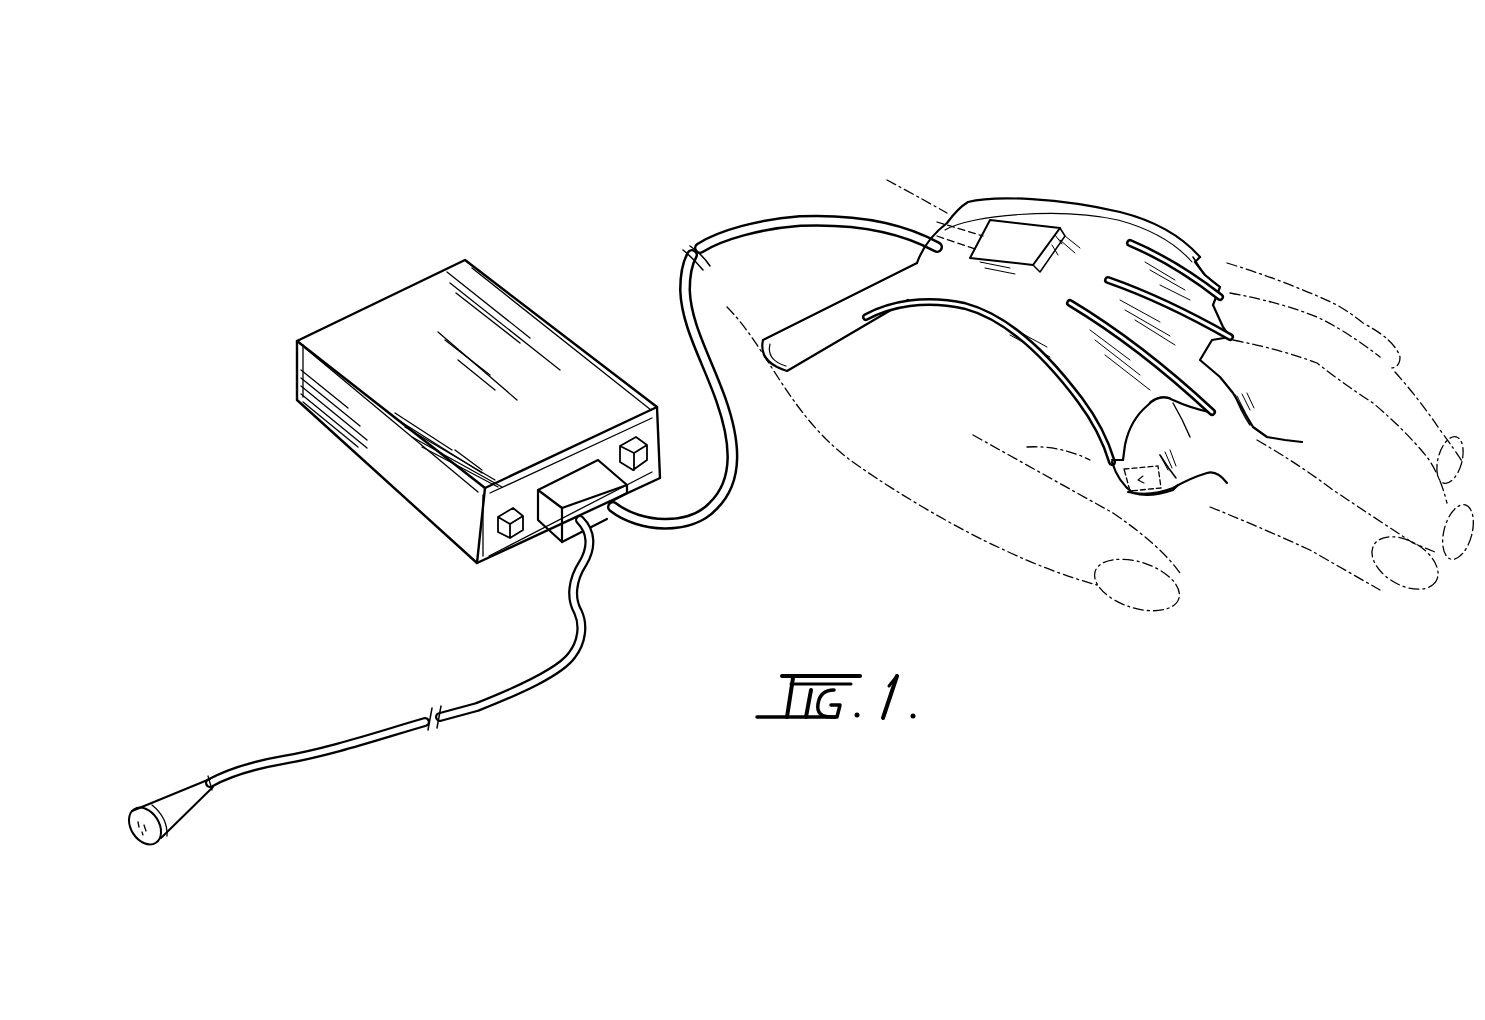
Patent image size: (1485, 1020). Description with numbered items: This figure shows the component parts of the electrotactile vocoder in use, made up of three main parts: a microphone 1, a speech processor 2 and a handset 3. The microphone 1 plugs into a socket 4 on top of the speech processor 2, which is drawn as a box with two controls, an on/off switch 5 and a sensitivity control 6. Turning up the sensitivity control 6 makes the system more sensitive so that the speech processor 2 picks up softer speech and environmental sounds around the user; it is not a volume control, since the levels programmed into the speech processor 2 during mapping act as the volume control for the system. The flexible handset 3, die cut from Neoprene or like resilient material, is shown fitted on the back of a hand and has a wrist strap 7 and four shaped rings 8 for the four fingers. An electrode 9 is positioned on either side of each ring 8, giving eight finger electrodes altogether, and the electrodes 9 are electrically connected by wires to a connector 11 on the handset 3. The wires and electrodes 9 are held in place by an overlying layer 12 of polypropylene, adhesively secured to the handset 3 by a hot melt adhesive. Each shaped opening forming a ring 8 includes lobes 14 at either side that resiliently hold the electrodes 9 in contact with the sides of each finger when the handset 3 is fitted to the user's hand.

The microphone 1 is at (183, 797).
The speech processor 2 is at (382, 442).
The handset 3 is at (1103, 370).
The socket 4 is at (607, 537).
The on/off switch 5 is at (507, 537).
The sensitivity control 6 is at (637, 442).
The wrist strap 7 is at (845, 318).
The shaped rings 8 is at (1203, 270).
The electrode 9 is at (1130, 497).
The connector 11 is at (1027, 237).
The overlying layer 12 is at (1163, 240).
The lobes 14 is at (1250, 403).